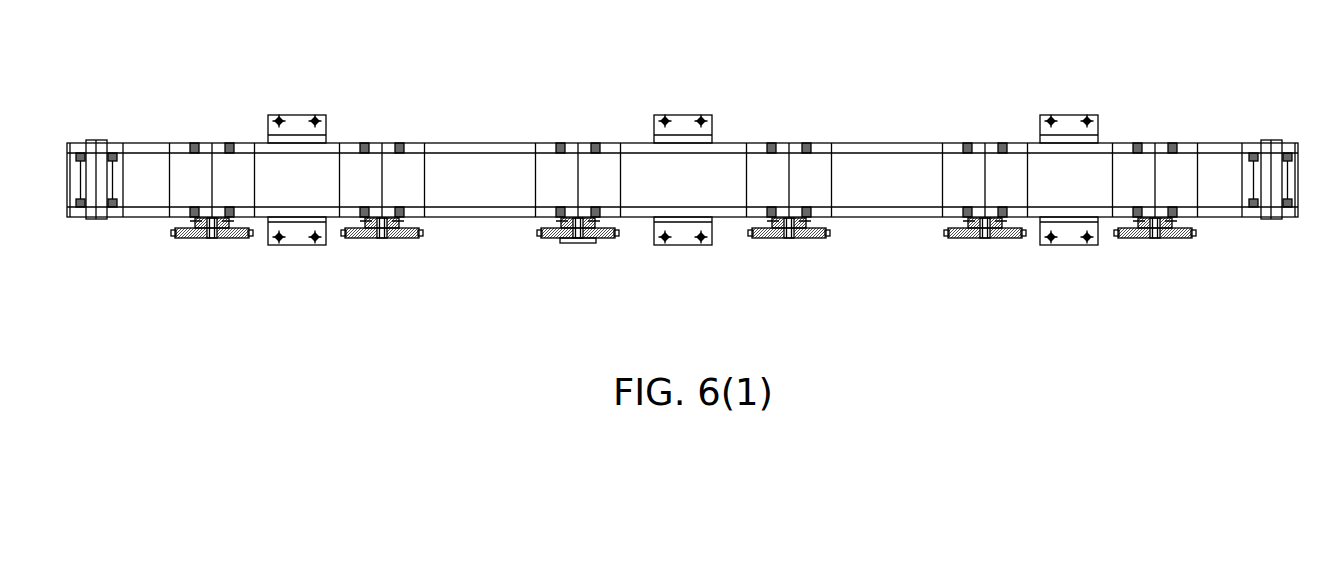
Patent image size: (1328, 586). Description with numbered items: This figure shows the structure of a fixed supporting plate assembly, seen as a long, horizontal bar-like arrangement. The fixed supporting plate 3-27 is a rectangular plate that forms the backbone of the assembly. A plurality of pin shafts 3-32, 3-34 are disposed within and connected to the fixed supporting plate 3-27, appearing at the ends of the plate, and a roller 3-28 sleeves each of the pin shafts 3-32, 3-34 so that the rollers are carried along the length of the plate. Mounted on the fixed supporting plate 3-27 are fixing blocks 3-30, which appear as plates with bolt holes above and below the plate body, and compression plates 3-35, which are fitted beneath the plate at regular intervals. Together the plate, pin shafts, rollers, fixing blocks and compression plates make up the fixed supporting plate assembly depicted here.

The fixed supporting plate 3-27 is at (148, 143).
The roller 3-28 is at (416, 168).
The fixing block 3-30 is at (671, 115).
The pin shaft 3-32 is at (1275, 140).
The pin shaft 3-34 is at (1302, 195).
The compression plate 3-35 is at (578, 243).